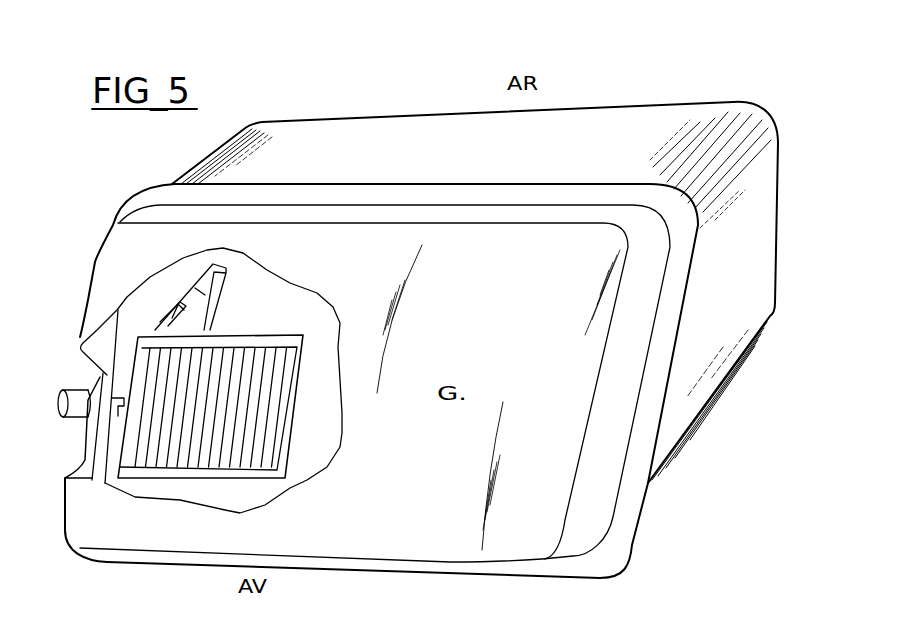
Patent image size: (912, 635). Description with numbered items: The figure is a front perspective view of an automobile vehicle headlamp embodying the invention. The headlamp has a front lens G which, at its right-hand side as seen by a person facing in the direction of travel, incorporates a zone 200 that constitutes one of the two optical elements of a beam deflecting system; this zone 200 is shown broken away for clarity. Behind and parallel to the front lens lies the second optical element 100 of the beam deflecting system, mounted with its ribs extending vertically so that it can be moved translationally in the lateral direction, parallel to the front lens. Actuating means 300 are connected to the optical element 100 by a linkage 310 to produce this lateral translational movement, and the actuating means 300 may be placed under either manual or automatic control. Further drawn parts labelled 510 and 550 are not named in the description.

The second optical element 100 is at (211, 407).
The zone 200 is at (289, 492).
The actuating means 300 is at (63, 418).
The linkage 310 is at (92, 480).
The latching tab 510 is at (205, 296).
The grille frame 550 is at (262, 339).